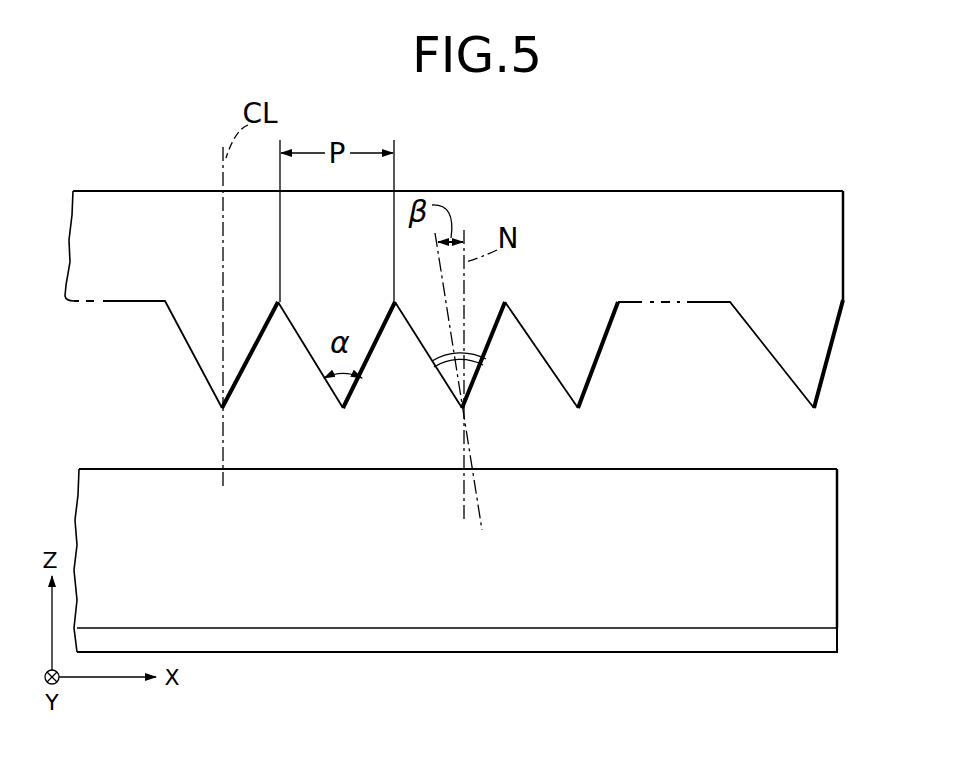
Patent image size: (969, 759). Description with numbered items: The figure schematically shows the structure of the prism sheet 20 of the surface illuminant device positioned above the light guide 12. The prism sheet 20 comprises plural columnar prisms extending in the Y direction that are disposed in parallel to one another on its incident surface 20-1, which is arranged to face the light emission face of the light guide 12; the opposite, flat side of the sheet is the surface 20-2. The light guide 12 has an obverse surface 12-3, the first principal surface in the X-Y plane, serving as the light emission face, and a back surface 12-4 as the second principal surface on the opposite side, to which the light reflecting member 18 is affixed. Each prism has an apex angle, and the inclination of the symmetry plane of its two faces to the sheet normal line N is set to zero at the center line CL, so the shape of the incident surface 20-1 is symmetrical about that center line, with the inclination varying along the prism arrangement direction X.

The prism sheet 20 is at (812, 256).
The incident surface 20-1 is at (171, 326).
The top (back) surface of tool 20 20-2 is at (157, 186).
The light guide 12 is at (820, 558).
The obverse surface 12-3 is at (758, 465).
The back surface 12-4 is at (680, 633).
The light reflecting member 18 is at (823, 642).